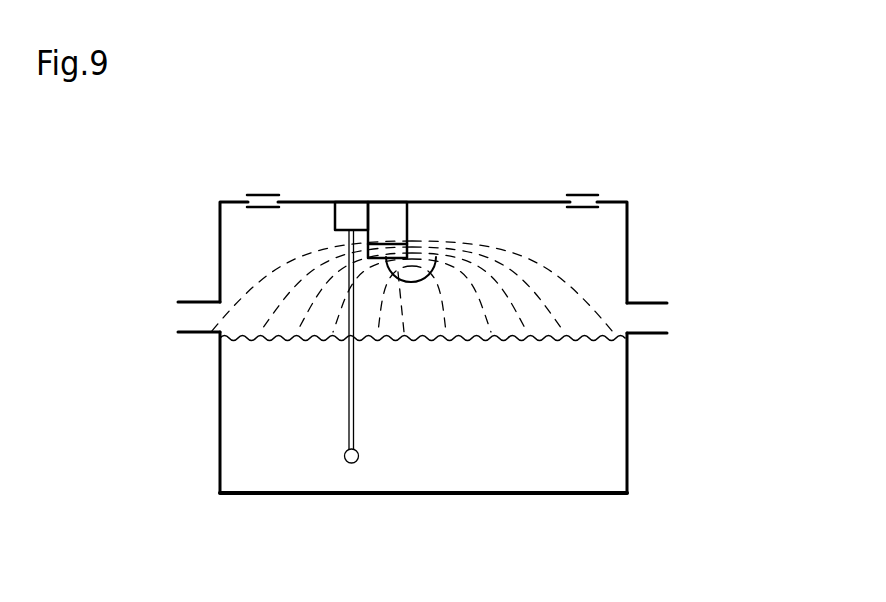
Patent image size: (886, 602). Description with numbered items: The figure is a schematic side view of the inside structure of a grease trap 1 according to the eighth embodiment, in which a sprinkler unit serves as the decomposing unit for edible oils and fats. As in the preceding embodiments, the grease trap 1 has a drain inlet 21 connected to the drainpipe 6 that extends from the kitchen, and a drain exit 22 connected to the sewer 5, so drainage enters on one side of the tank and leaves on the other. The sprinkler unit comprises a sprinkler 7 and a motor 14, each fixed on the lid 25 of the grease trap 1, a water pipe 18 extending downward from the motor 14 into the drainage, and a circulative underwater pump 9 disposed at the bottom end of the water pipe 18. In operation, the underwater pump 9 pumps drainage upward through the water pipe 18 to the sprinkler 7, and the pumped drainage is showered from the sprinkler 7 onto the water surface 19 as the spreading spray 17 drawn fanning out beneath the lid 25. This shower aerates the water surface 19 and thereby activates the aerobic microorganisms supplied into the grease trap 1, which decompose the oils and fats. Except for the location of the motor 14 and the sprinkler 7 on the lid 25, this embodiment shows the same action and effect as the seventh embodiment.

The grease trap 1 is at (613, 180).
The sewer 5 is at (188, 319).
The drainpipe 6 is at (655, 322).
The sprinkler 7 is at (429, 275).
The underwater pump 9 is at (347, 463).
The motor 14 is at (352, 210).
The spray jets 17 is at (263, 273).
The water pipe 18 is at (349, 412).
The water surface 19 is at (552, 342).
The drain inlet 21 is at (628, 312).
The drain exit 22 is at (206, 325).
The lid 25 is at (418, 202).